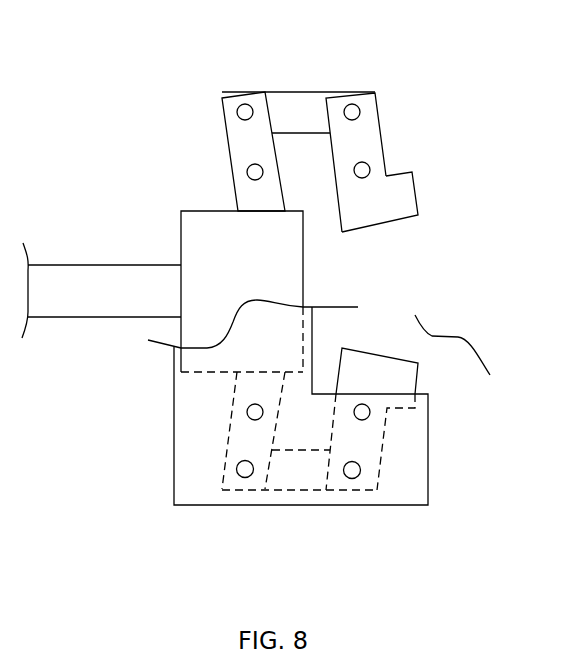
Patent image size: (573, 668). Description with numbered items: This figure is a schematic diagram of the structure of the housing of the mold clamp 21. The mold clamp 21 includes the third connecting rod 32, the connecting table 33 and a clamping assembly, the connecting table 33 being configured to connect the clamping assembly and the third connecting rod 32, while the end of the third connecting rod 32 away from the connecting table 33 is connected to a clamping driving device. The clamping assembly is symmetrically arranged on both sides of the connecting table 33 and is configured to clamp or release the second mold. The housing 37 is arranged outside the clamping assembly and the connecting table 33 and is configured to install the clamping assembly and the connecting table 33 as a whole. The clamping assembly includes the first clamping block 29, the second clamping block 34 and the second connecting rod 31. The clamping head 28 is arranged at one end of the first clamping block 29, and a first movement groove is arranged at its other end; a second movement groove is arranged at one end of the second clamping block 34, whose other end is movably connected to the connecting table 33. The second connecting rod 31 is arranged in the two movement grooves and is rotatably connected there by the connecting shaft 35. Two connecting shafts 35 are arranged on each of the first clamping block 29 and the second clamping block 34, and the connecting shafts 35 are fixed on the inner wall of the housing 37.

The mold clamp 21 is at (472, 366).
The clamping head 28 is at (382, 225).
The first clamping block 29 is at (372, 140).
The second connecting rod 31 is at (293, 107).
The third connecting rod 32 is at (107, 282).
The connecting table 33 is at (195, 237).
The second clamping block 34 is at (245, 143).
The connecting shaft 35 is at (352, 470).
The housing 37 is at (198, 425).